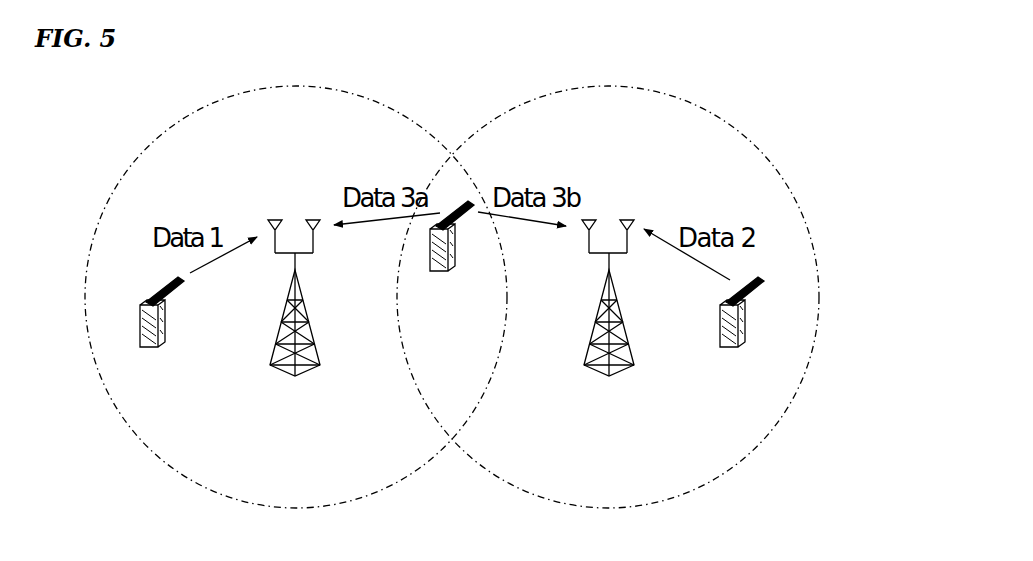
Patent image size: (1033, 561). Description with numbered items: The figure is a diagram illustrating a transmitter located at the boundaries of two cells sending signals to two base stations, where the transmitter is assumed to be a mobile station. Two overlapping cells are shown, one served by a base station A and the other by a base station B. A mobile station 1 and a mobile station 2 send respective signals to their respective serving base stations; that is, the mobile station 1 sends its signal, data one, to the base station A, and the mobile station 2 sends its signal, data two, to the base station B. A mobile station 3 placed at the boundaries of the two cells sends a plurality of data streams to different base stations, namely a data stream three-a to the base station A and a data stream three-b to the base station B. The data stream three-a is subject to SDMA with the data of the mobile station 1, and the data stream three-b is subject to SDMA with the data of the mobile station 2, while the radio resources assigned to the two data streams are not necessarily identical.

The mobile station 1 is at (156, 328).
The mobile station 2 is at (735, 328).
The mobile station 3 is at (447, 251).
The base station A is at (292, 316).
The base station B is at (606, 316).